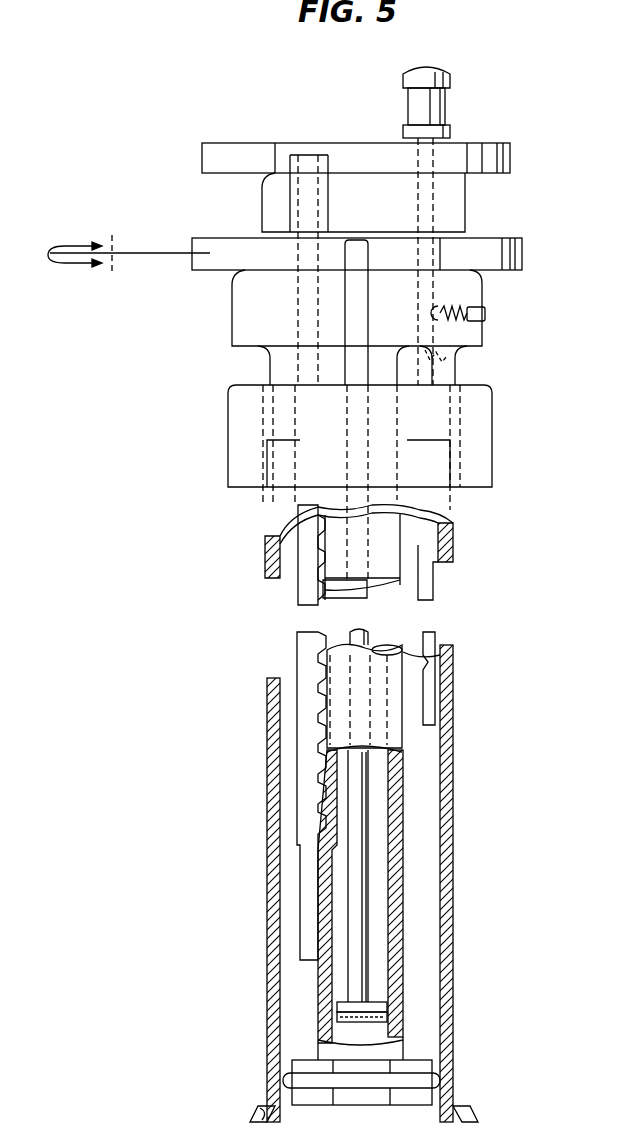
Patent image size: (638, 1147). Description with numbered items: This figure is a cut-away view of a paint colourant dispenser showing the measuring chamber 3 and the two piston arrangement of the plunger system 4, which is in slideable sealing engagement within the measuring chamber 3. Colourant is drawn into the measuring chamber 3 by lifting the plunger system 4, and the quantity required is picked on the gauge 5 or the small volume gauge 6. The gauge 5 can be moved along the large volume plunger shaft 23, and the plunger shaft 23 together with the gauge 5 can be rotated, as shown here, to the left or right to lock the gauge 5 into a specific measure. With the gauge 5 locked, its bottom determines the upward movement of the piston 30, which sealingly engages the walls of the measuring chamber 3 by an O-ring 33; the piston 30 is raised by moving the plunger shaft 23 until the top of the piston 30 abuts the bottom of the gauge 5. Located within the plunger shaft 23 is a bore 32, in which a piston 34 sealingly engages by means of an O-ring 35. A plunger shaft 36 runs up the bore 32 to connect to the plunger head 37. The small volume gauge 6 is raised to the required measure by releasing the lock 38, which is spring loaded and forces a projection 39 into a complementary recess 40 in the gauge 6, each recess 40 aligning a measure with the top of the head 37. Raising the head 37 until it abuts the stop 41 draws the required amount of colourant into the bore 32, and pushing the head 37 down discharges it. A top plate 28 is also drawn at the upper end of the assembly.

The measuring chamber 3 is at (453, 812).
The plunger system 4 is at (145, 533).
The gauge 5 is at (298, 660).
The small volume gauge 6 is at (450, 586).
The plunger shaft 23 is at (320, 990).
The top plate 28 is at (258, 142).
The piston 30 is at (420, 1068).
The bore 32 is at (392, 950).
The O-ring 33 is at (432, 1080).
The piston 34 is at (387, 1003).
The O-ring 35 is at (387, 1013).
The plunger shaft 36 is at (360, 878).
The plunger head 37 is at (507, 143).
The lock 38 is at (487, 314).
The projection 39 is at (438, 310).
The recess 40 is at (440, 366).
The stop 41 is at (455, 133).